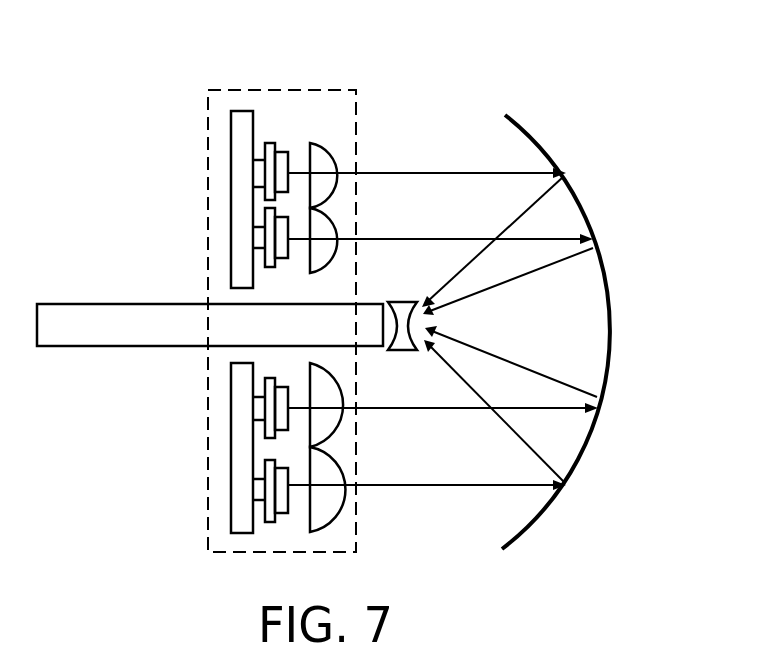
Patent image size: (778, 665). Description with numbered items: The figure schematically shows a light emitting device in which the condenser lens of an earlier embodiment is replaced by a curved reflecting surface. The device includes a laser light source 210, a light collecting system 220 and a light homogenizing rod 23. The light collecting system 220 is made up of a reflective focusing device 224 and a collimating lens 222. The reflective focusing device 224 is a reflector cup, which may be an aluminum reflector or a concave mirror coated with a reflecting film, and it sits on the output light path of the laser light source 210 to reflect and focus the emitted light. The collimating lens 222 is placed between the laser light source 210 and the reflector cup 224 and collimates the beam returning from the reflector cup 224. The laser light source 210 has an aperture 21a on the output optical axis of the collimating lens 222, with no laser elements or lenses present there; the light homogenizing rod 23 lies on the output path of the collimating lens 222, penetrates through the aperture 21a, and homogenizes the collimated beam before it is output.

The laser light source 210 is at (248, 89).
The aperture 21a is at (252, 353).
The light homogenizing rod 23 is at (135, 303).
The light collecting system 220 is at (593, 28).
The collimating lens 222 is at (400, 302).
The reflective focusing device 224 is at (505, 115).